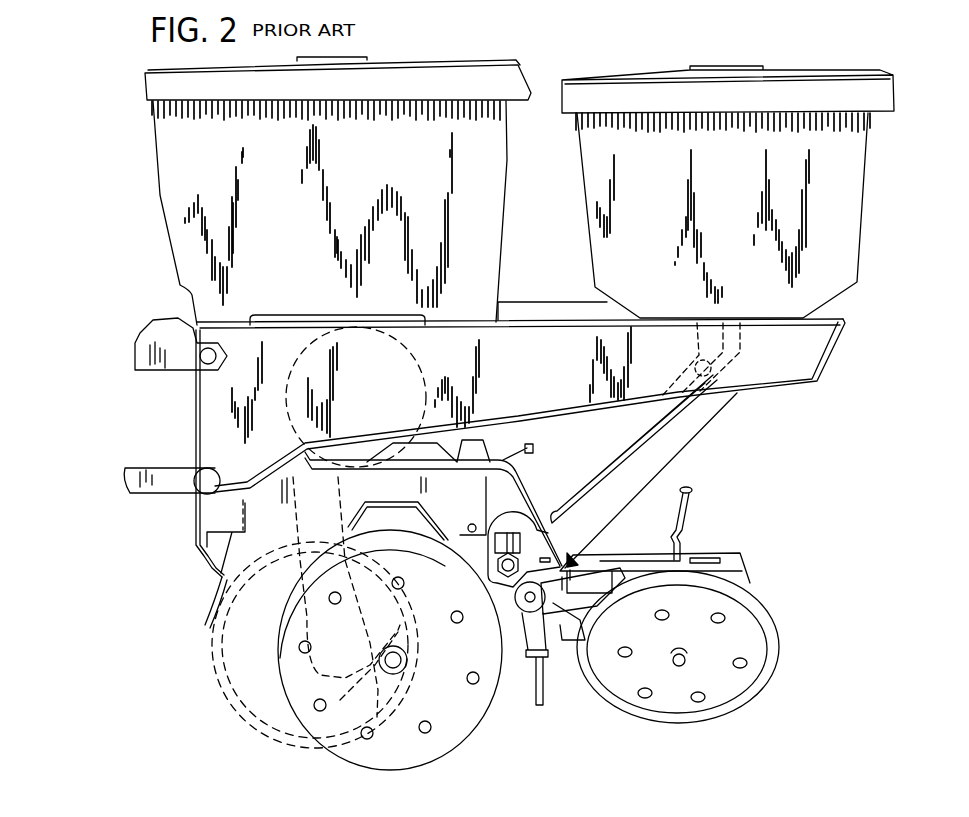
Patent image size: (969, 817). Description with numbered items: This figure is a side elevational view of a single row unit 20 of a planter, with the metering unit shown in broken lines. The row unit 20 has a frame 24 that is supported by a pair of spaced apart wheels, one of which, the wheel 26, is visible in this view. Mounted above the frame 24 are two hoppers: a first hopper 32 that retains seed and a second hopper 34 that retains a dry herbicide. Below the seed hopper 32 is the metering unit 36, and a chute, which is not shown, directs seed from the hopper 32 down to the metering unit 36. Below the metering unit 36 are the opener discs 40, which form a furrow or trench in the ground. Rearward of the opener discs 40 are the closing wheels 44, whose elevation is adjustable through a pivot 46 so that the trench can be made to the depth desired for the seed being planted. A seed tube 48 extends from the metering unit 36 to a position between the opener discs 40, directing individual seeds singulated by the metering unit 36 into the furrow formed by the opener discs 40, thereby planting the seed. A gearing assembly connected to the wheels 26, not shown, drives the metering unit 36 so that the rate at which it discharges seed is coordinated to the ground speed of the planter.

The row unit 20 is at (102, 316).
The frame 24 is at (832, 357).
The wheel 26 is at (277, 672).
The first hopper 32 is at (160, 195).
The second hopper 34 is at (868, 195).
The metering unit 36 is at (286, 395).
The opener discs 40 is at (212, 640).
The closing wheels 44 is at (780, 622).
The pivot 46 is at (657, 470).
The seed tube 48 is at (280, 510).